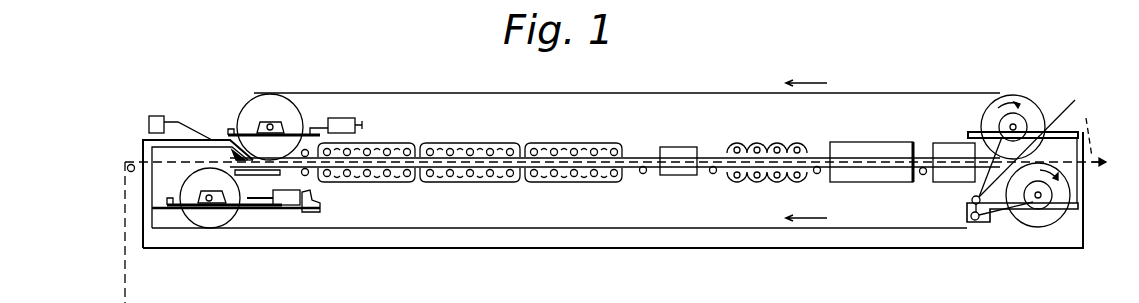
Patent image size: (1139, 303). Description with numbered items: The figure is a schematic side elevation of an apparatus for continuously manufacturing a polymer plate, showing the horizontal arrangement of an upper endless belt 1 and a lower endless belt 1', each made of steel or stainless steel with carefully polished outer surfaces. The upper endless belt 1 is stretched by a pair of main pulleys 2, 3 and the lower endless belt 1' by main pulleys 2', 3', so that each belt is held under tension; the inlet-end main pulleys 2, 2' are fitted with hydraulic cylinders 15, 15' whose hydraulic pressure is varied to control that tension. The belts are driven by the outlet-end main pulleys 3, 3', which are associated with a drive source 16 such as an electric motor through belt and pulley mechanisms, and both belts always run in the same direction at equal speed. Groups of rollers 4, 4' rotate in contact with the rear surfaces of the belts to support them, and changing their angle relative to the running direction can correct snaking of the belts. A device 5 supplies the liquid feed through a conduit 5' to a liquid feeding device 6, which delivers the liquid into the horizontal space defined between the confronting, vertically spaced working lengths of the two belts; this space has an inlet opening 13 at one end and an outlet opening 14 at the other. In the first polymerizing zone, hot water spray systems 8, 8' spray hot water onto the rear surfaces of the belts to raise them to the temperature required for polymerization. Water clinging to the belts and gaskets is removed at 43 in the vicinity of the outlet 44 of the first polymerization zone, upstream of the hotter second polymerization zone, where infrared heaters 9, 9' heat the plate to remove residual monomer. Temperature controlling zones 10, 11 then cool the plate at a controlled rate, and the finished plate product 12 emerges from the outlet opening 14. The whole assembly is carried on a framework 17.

The upper endless belt 1 is at (627, 73).
The lower endless belt 1' is at (613, 210).
The main pulley 2 is at (270, 103).
The main pulley 2' is at (208, 228).
The main pulley 3 is at (1023, 110).
The main pulley 3' is at (1038, 229).
The group of rollers 4 is at (470, 105).
The group of rollers 4' is at (470, 233).
The liquid feed supplying device 5 is at (153, 93).
The conduit 5' is at (188, 100).
The liquid feeding device 6 is at (243, 150).
The hot water spray system 8 is at (470, 107).
The hot water spray system 8' is at (470, 233).
The infrared heater 9 is at (767, 122).
The infrared heater 9' is at (767, 232).
The temperature controlling zone 10 is at (878, 145).
The temperature controlling zone 11 is at (950, 148).
The finished plate product 12 is at (619, 198).
The inlet opening 13 is at (287, 140).
The outlet opening 14 is at (1034, 140).
The hydraulic cylinder 15 is at (336, 98).
The hydraulic cylinder 15' is at (236, 240).
The drive source 16 is at (977, 223).
The framework 17 is at (1080, 208).
The water removal location 43 is at (680, 147).
The outlet of the first polymerization zone 44 is at (628, 160).